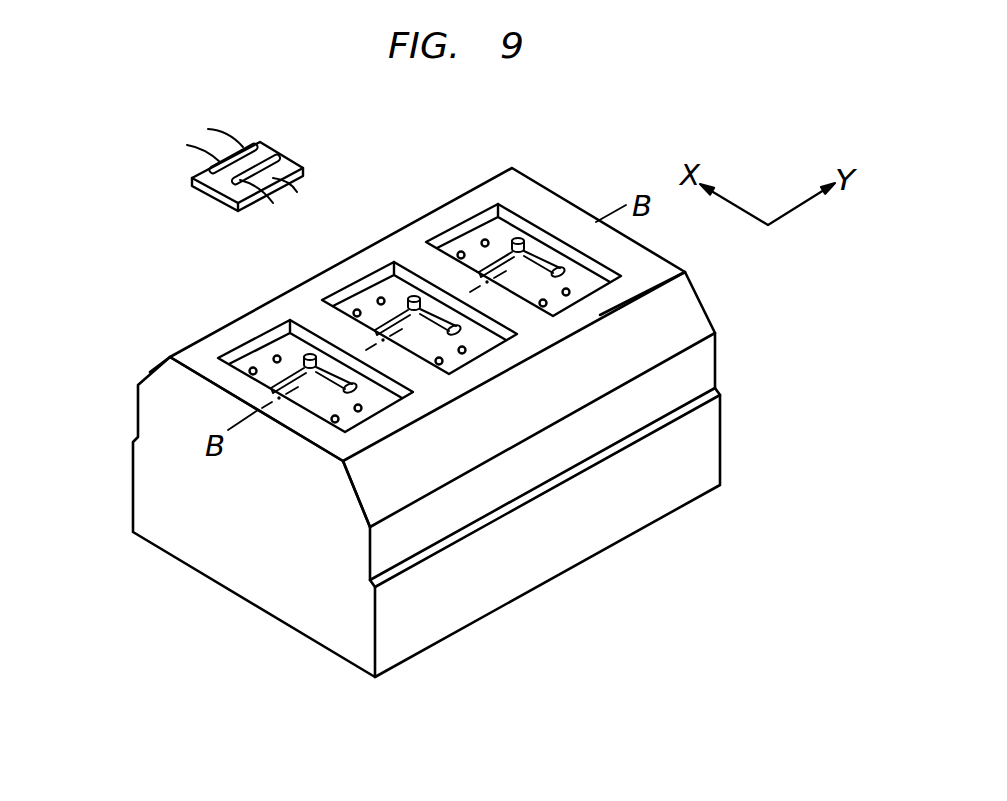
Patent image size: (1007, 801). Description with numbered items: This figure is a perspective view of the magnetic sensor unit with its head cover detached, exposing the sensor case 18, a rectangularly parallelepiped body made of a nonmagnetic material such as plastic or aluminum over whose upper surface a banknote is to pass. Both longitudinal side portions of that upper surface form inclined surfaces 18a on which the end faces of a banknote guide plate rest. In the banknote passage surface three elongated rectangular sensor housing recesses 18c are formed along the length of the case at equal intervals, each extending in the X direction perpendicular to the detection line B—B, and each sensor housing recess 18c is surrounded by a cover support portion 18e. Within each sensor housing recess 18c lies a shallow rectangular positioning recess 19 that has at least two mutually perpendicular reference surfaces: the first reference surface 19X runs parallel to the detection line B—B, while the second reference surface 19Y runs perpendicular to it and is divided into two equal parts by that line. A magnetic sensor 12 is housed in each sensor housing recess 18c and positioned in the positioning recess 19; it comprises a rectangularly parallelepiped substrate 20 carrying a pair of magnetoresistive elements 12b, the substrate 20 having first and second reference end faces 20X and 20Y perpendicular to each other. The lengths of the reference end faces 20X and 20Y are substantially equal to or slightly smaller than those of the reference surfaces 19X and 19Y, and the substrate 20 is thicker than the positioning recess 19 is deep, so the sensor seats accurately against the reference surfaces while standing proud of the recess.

The magnetic sensor 12 is at (250, 164).
The magnetoresistive element 12b is at (257, 144).
The substrate 20 is at (273, 143).
The first reference end face 20X is at (197, 175).
The second reference end face 20Y is at (288, 170).
The sensor case 18 is at (172, 527).
The inclined surface 18a is at (152, 372).
The sensor housing recess 18c is at (238, 349).
The cover support portion 18e is at (613, 300).
The positioning recess 19 is at (356, 400).
The first reference surface 19X is at (306, 357).
The second reference surface 19Y is at (324, 368).